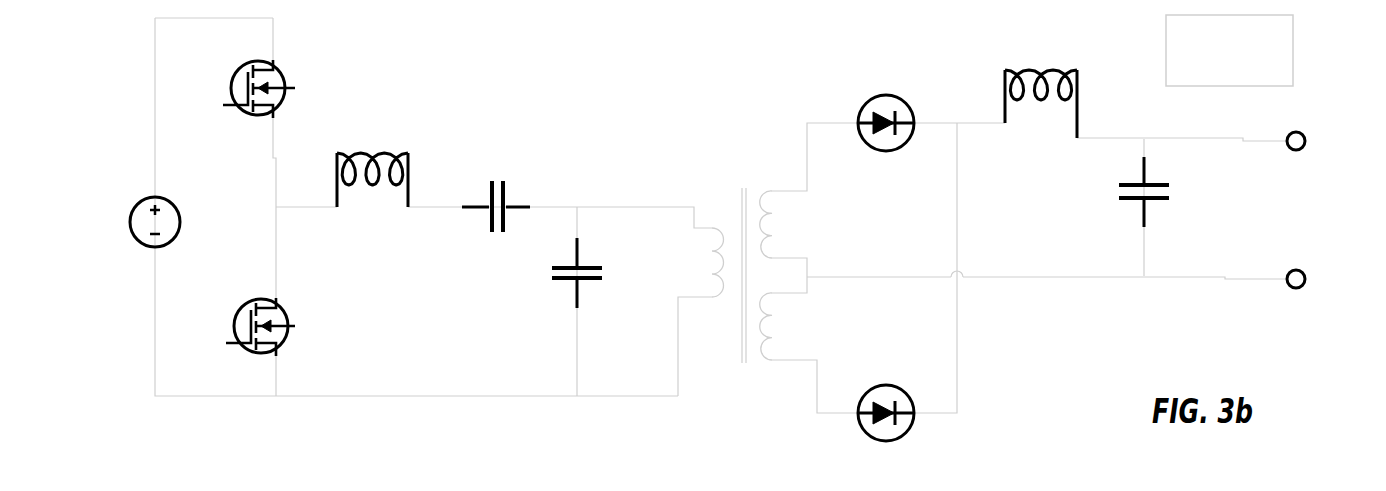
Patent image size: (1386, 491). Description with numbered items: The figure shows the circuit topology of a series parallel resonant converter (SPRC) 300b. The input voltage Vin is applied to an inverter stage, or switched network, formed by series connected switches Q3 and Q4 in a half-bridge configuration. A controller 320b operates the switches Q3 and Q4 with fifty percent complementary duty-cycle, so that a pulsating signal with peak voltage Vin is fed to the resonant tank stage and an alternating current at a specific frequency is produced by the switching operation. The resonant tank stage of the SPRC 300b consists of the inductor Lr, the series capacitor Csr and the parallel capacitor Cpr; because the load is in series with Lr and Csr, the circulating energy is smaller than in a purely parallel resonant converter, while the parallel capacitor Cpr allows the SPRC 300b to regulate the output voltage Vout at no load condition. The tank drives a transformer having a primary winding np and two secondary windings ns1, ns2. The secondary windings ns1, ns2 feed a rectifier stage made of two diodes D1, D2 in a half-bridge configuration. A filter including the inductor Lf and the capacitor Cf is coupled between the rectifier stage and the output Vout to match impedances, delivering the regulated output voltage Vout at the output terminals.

The series parallel resonant converter 300b is at (446, 53).
The controller 320b is at (1229, 50).
The input voltage Vin is at (138, 222).
The switch Q3 is at (259, 74).
The switch Q4 is at (260, 311).
The inductor Lr is at (372, 164).
The capacitor Csr is at (496, 188).
The capacitor Cpr is at (601, 273).
The primary winding np is at (697, 262).
The secondary winding ns1 is at (789, 224).
The secondary winding ns2 is at (792, 326).
The diode D1 is at (886, 137).
The diode D2 is at (886, 426).
The inductor Lf is at (1041, 88).
The capacitor Cf is at (1162, 192).
The output Vout is at (1313, 210).